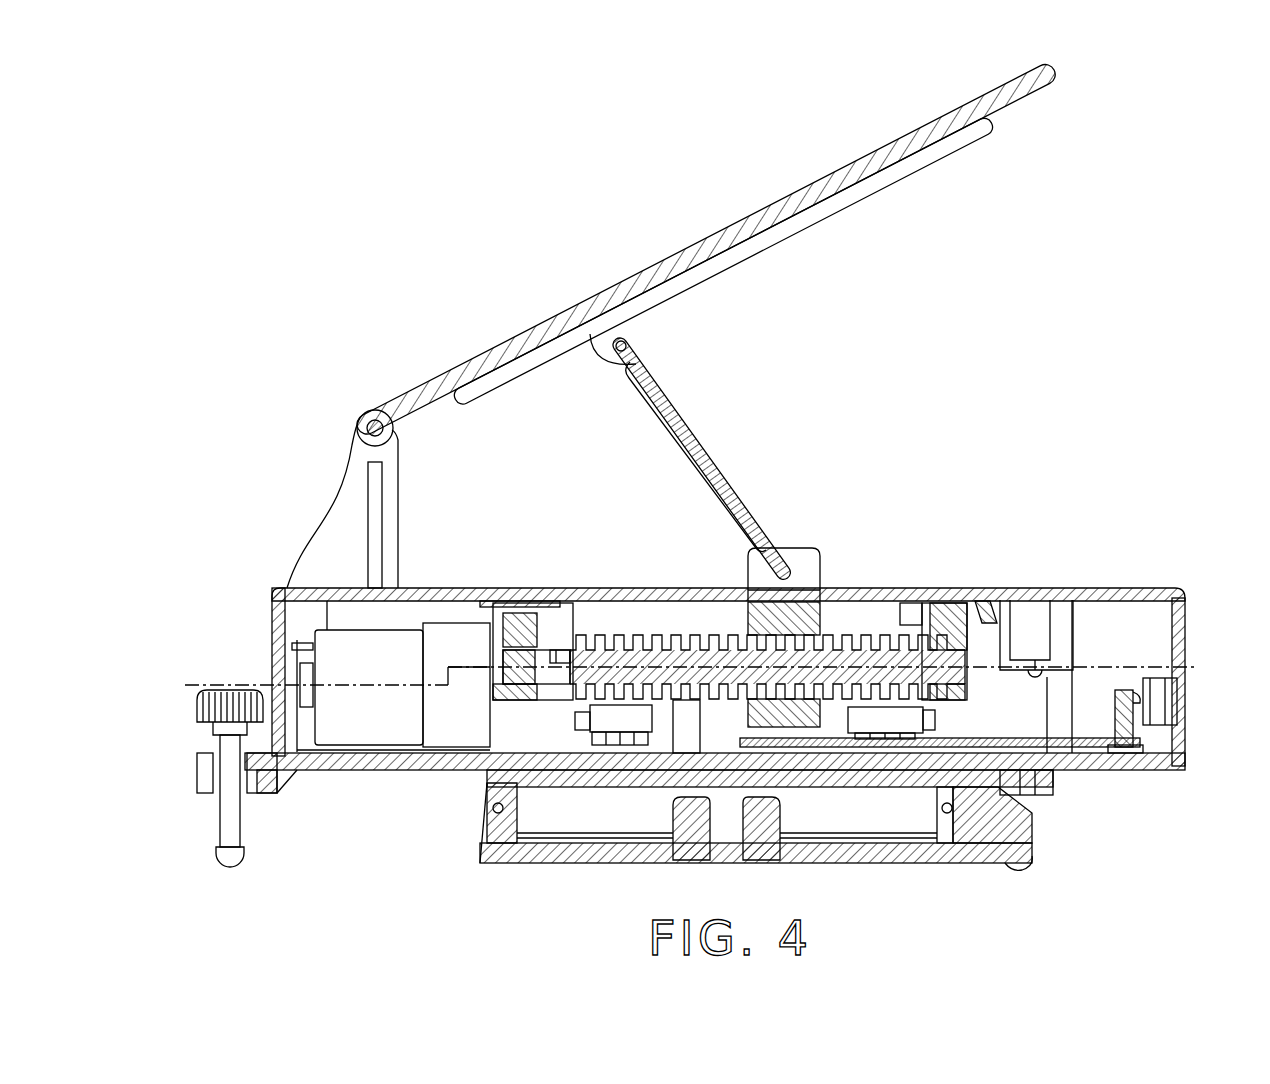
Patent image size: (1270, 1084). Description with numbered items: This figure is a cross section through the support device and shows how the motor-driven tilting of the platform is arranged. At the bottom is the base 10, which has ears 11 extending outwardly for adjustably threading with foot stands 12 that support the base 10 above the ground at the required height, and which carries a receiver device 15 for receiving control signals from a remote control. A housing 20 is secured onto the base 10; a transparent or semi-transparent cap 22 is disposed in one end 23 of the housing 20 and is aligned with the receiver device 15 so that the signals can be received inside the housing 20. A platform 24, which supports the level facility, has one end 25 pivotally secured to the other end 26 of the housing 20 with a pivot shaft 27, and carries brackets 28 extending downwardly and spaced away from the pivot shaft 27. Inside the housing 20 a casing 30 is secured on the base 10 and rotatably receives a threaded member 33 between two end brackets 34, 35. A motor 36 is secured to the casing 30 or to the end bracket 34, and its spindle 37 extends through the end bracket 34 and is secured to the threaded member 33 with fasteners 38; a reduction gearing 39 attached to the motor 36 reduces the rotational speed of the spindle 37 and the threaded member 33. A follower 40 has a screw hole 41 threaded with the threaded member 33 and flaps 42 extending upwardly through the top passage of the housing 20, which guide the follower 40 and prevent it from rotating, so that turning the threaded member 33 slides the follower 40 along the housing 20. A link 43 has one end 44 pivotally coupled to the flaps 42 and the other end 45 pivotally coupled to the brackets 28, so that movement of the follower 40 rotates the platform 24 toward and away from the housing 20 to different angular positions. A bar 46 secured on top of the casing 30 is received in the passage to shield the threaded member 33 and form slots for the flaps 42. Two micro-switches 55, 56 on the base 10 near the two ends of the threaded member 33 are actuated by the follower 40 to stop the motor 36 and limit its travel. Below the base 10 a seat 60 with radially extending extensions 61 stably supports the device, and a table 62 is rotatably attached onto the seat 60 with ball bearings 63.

The base 10 is at (1128, 770).
The ear 11 is at (200, 776).
The foot stand 12 is at (233, 818).
The receiver device 15 is at (1128, 692).
The housing 20 is at (283, 590).
The cap 22 is at (1184, 702).
The end of the housing 23 is at (1200, 608).
The platform 24 is at (788, 200).
The end of the platform 25 is at (380, 390).
The other end of the housing 26 is at (312, 496).
The pivot shaft 27 is at (362, 430).
The bracket 28 is at (600, 343).
The casing 30 is at (992, 612).
The threaded member 33 is at (657, 640).
The end bracket 34 is at (520, 625).
The end bracket 35 is at (948, 610).
The motor 36 is at (363, 733).
The spindle 37 is at (519, 673).
The fastener 38 is at (558, 643).
The reduction gearing 39 is at (453, 637).
The follower 40 is at (820, 556).
The screw hole 41 is at (831, 596).
The flap 42 is at (791, 545).
The link 43 is at (703, 450).
The end of the link 44 is at (770, 510).
The other end of the link 45 is at (662, 358).
The bar 46 is at (597, 592).
The micro-switch 55 is at (887, 720).
The micro-switch 56 is at (617, 723).
The seat 60 is at (488, 850).
The extension 61 is at (1022, 858).
The table 62 is at (803, 780).
The ball bearing 63 is at (488, 808).